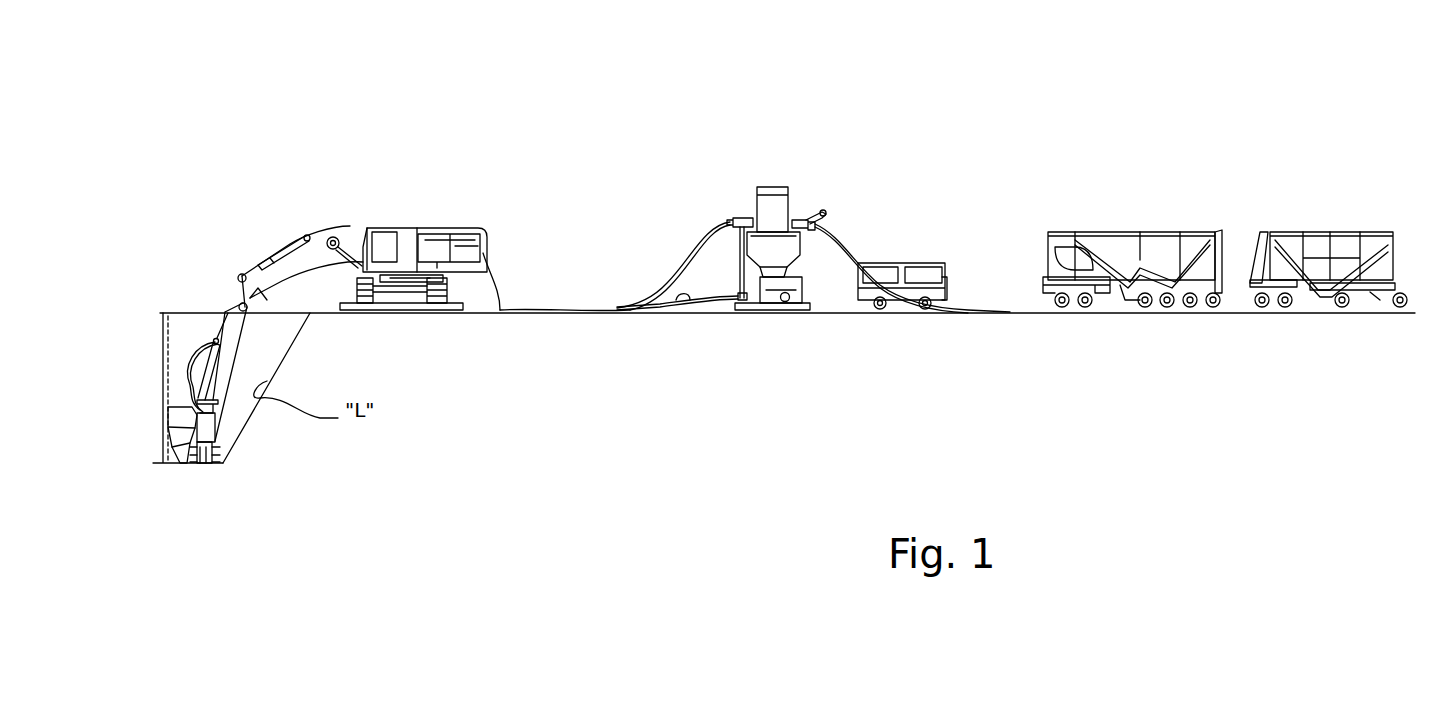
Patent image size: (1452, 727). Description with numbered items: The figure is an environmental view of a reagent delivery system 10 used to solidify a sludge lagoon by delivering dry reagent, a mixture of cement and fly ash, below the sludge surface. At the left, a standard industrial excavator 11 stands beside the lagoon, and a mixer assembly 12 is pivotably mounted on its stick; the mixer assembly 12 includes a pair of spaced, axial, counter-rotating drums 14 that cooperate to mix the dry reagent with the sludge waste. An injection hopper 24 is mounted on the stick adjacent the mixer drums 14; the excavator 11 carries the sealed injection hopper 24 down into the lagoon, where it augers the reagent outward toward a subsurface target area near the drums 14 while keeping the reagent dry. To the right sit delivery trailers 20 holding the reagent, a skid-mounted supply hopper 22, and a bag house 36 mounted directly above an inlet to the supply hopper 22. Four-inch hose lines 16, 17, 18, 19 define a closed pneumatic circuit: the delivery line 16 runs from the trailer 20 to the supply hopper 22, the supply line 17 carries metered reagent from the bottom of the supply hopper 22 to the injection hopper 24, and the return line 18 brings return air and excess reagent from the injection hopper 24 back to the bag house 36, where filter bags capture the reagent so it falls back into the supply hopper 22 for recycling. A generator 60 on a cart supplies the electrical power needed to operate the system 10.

The reagent delivery system 10 is at (305, 188).
The excavator 11 is at (433, 252).
The mixer assembly 12 is at (225, 488).
The counter-rotating drums 14 is at (203, 463).
The delivery line 16 is at (968, 310).
The supply line 17 is at (695, 312).
The return line 18 is at (690, 262).
The hose line 19 is at (738, 263).
The delivery trailers 20 is at (1292, 232).
The supply hopper 22 is at (760, 242).
The injection hopper 24 is at (165, 418).
The bag house 36 is at (783, 203).
The generator 60 is at (902, 263).